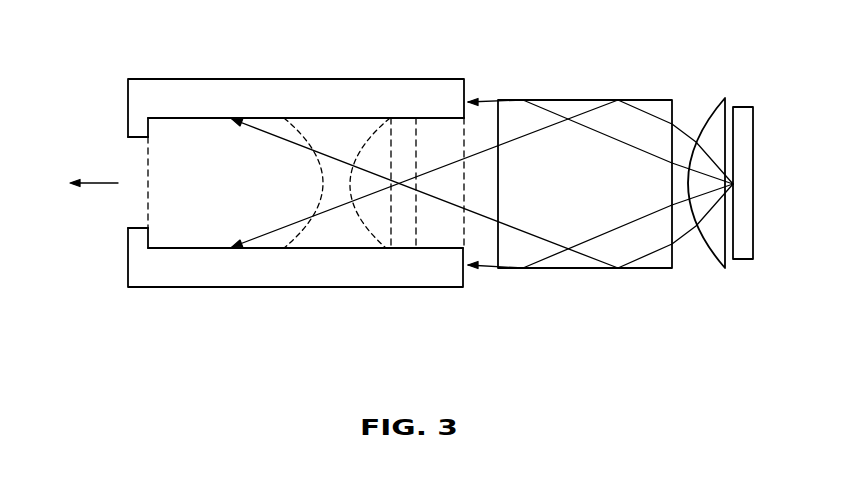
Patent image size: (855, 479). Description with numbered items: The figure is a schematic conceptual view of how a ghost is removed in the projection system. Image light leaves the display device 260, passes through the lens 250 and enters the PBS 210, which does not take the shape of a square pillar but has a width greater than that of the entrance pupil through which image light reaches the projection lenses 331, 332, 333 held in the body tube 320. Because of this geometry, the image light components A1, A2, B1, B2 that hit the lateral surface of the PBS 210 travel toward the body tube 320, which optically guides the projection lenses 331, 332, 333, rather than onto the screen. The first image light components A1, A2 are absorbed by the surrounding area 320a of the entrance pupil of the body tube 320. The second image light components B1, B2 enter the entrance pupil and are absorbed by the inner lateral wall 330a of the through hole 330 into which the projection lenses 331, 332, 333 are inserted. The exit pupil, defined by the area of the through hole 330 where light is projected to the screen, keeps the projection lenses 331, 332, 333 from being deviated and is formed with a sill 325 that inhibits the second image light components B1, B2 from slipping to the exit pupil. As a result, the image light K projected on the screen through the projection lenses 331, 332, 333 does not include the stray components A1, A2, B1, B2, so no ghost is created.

The PBS 210 is at (573, 98).
The lens 250 is at (711, 106).
The display device 260 is at (744, 113).
The body tube 320 is at (300, 97).
The surrounding area of the entrance pupil 320a is at (470, 88).
The sill 325 is at (128, 137).
The through hole 330 is at (340, 128).
The inner lateral wall 330a is at (183, 117).
The projection lens 331 is at (435, 237).
The projection lens 332 is at (373, 220).
The projection lens 333 is at (207, 232).
The first image light component A1 is at (600, 128).
The first image light component A2 is at (600, 244).
The second image light component B1 is at (476, 193).
The second image light component B2 is at (476, 173).
The image light K is at (82, 184).